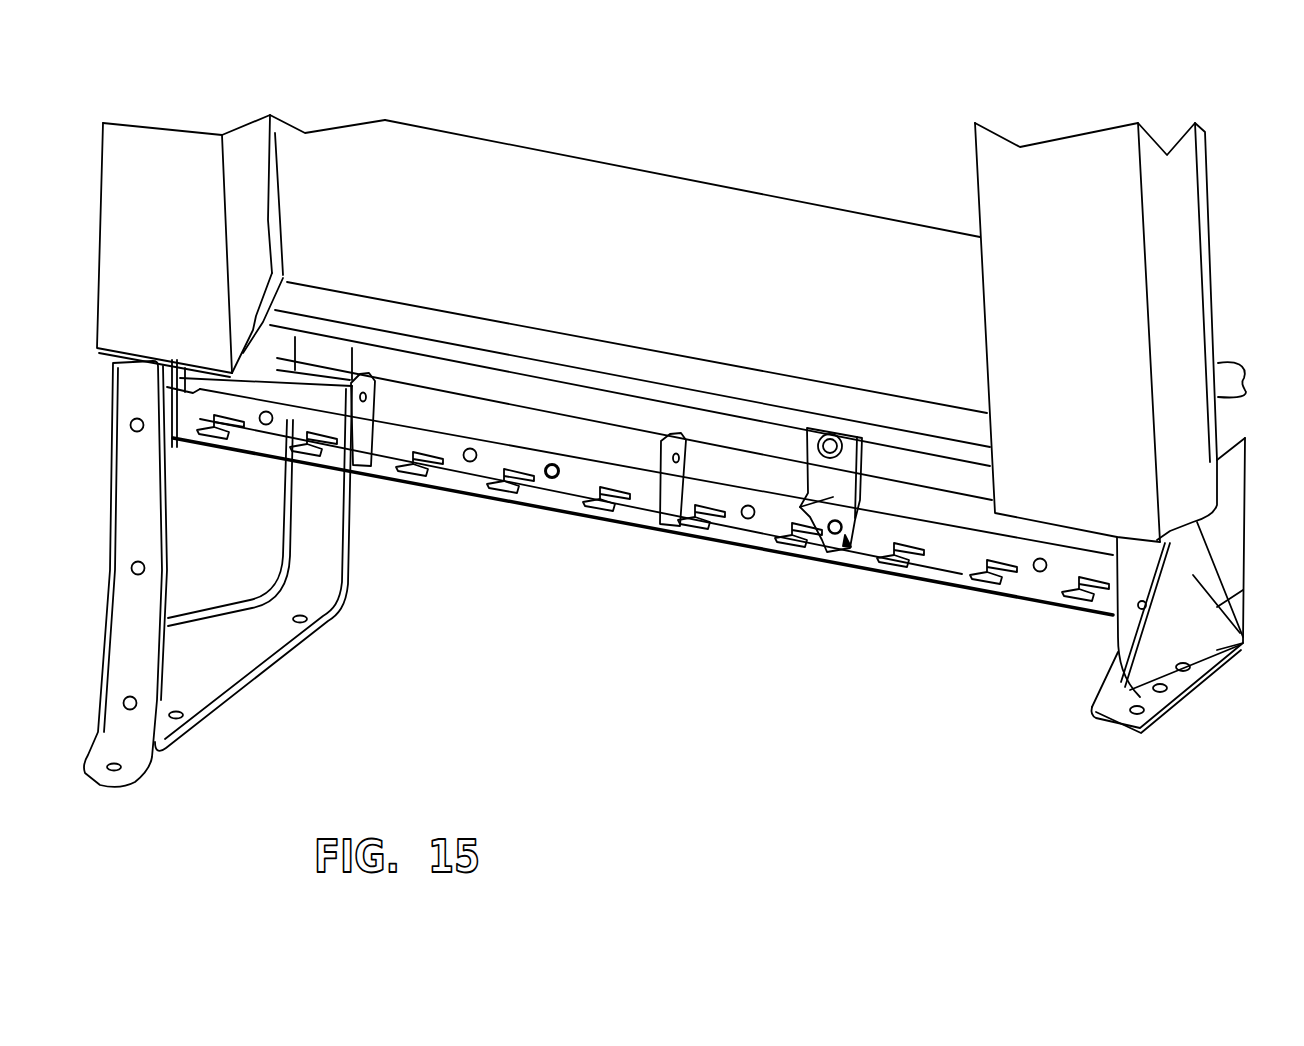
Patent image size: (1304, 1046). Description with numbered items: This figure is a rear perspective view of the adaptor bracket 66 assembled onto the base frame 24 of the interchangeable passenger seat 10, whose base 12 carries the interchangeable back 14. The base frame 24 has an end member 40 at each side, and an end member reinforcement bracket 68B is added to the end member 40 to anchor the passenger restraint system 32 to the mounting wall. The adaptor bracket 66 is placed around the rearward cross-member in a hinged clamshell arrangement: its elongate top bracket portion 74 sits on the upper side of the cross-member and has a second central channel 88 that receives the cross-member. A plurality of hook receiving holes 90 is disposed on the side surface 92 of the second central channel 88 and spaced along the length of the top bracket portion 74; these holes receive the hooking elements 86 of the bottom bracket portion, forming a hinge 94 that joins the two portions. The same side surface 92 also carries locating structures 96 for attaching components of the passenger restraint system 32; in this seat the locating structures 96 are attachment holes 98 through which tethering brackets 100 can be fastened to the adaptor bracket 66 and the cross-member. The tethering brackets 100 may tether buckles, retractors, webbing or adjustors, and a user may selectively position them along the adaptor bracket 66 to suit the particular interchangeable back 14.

The interchangeable passenger seat 10 is at (594, 708).
The base 12 is at (255, 657).
The interchangeable back 14 is at (1035, 172).
The base frame 24 is at (220, 687).
The passenger restraint system 32 is at (858, 540).
The end member 40 is at (290, 632).
The adaptor bracket 66 is at (607, 440).
The end member reinforcement bracket 68B is at (1125, 703).
The top bracket portion 74 is at (502, 423).
The hooking elements 86 is at (588, 490).
The second central channel 88 is at (660, 500).
The hook receiving holes 90 is at (447, 467).
The side surface 92 is at (382, 463).
The hinge 94 is at (910, 553).
The locating structures 96 is at (553, 478).
The attachment holes 98 is at (532, 467).
The tethering brackets 100 is at (652, 475).